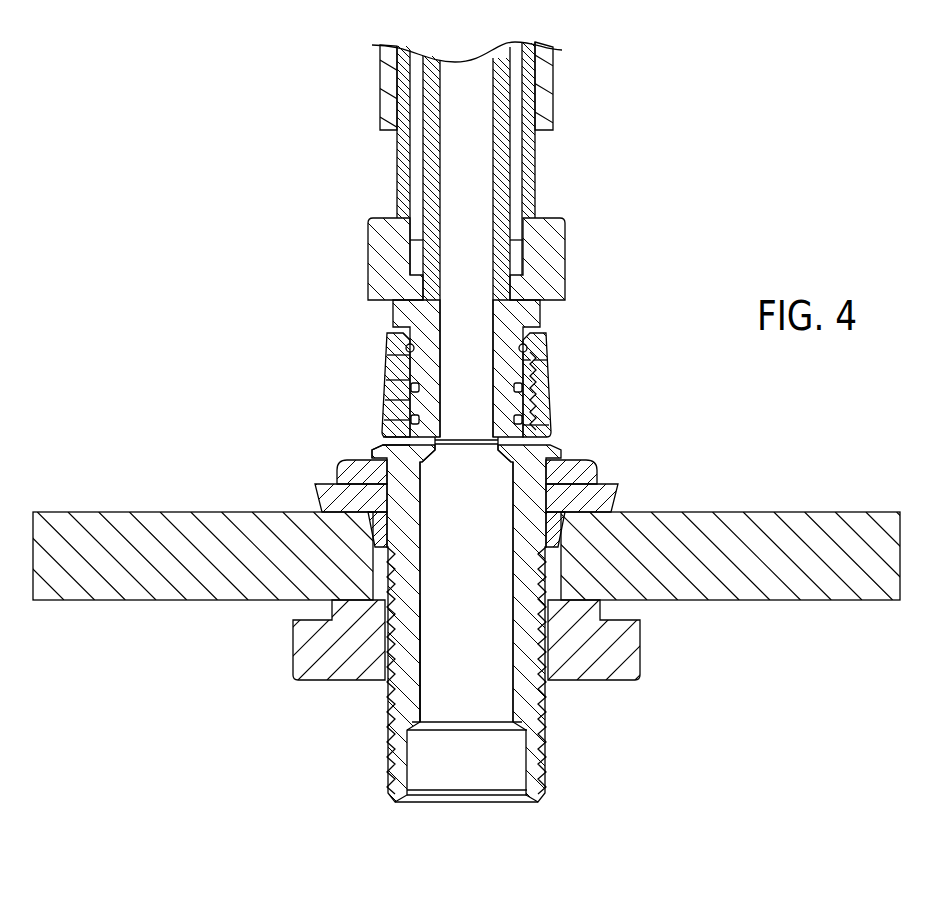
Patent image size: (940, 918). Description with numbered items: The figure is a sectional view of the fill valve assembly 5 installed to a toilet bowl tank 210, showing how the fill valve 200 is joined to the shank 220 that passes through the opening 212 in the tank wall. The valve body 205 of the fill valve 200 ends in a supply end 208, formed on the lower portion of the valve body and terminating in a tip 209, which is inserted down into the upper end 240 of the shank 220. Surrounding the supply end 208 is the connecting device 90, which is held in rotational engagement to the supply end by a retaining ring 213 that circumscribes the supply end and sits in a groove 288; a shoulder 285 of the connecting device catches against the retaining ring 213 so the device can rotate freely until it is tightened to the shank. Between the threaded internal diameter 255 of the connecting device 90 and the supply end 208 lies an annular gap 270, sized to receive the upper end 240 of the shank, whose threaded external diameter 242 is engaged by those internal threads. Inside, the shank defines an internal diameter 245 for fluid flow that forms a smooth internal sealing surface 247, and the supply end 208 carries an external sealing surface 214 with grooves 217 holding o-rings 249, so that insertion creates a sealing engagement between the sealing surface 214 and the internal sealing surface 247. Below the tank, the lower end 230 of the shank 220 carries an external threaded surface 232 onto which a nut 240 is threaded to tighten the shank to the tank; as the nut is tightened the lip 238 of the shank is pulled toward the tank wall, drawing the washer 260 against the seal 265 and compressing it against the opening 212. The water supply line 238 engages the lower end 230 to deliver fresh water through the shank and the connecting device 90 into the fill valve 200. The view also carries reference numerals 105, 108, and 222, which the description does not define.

The fill valve assembly 5 is at (834, 215).
The connecting device 90 is at (545, 432).
The ferrule bottom 105 is at (385, 438).
The ferrule top 108 is at (410, 345).
The fill valve 200 is at (678, 181).
The valve body 205 is at (553, 100).
The supply end 208 is at (396, 414).
The tip 209 is at (417, 452).
The toilet bowl tank 210 is at (850, 517).
The opening 212 is at (550, 573).
The retaining ring 213 is at (546, 346).
The sealing surface 214 is at (401, 398).
The grooves 217 is at (399, 384).
The shank 220 is at (433, 682).
The body wall 222 is at (420, 633).
The lower end 230 is at (531, 768).
The external threaded surface 232 is at (544, 713).
The water supply line 238 is at (563, 452).
The upper end of shank 240 is at (544, 397).
The threaded external diameter 242 is at (544, 350).
The internal diameter 245 is at (516, 382).
The internal sealing surface 247 is at (516, 418).
The o-rings 249 is at (392, 360).
The threaded internal diameter 255 is at (544, 370).
The washer 260 is at (590, 470).
The seal 265 is at (612, 498).
The annular gap 270 is at (388, 336).
The shoulder 285 is at (413, 346).
The groove 288 is at (500, 320).